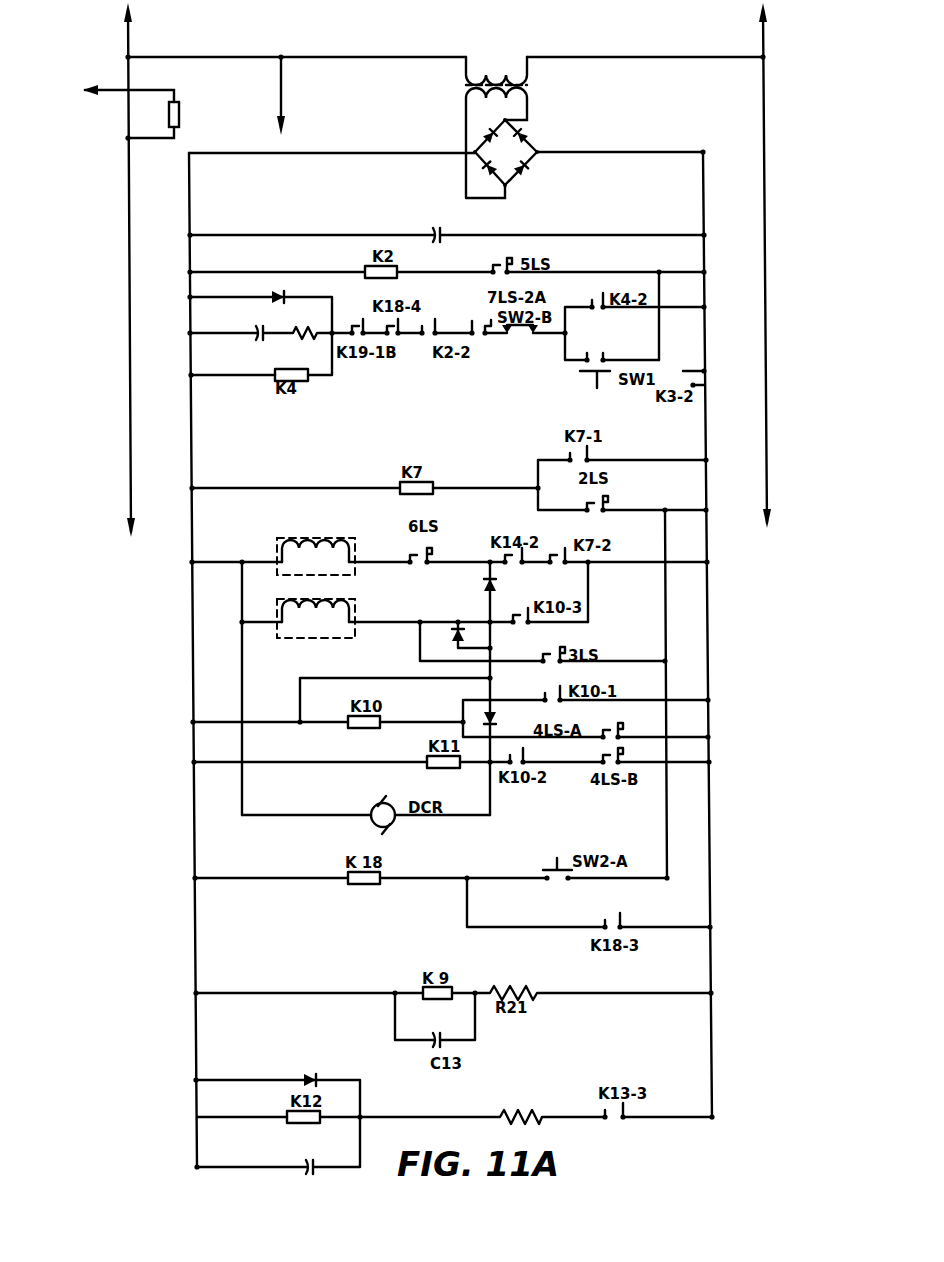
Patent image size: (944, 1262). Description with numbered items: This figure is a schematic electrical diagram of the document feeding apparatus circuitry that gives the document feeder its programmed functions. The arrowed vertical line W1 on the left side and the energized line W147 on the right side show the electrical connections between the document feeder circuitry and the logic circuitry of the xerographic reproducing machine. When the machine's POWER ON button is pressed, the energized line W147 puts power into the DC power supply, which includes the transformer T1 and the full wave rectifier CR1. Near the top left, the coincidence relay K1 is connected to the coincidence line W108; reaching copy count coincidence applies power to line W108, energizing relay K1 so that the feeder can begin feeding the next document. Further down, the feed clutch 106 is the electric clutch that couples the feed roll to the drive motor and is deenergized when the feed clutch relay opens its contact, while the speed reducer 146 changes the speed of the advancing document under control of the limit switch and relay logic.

The feed clutch 106 is at (295, 538).
The speed reducer 146 is at (310, 640).
The electrical connection line W1 is at (128, 232).
The coincidence line W108 is at (80, 91).
The energized AC logic line W147 is at (768, 222).
The coincidence relay K1 is at (167, 114).
The transformer T1 is at (496, 123).
The full wave rectifier CR1 is at (523, 152).